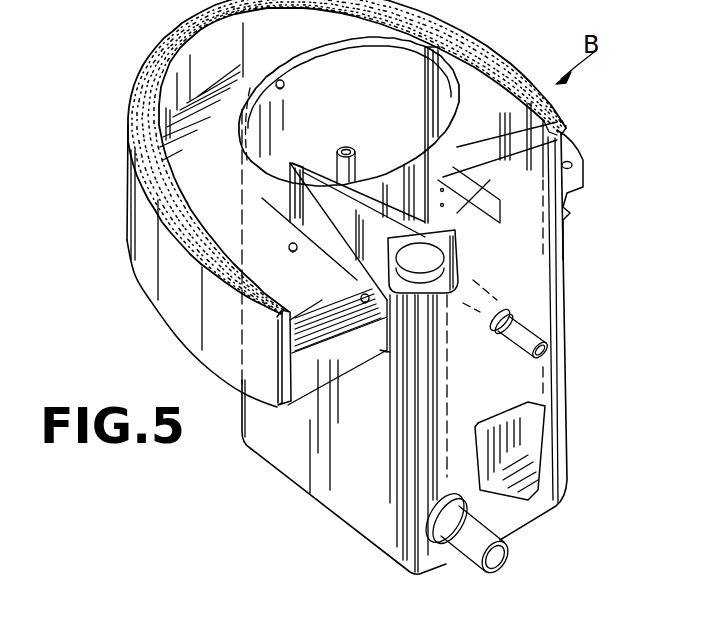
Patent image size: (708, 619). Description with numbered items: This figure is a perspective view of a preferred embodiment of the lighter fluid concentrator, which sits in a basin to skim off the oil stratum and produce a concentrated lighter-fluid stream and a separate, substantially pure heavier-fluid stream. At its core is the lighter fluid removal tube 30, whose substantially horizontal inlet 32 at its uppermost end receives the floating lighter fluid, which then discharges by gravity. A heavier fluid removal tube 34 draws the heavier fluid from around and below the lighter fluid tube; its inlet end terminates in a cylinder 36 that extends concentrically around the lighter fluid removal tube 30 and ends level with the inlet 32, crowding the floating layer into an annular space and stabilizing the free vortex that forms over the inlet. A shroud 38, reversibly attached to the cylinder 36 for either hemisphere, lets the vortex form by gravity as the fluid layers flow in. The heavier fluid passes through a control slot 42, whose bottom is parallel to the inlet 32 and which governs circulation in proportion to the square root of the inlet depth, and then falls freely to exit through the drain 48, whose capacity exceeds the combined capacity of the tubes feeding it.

The lighter fluid removal tube 30 is at (360, 168).
The inlet 32 is at (337, 141).
The heavier fluid removal tube 34 is at (525, 435).
The cylinder 36 is at (330, 490).
The shroud 38 is at (140, 198).
The control slot 42 is at (470, 200).
The drain 48 is at (460, 560).